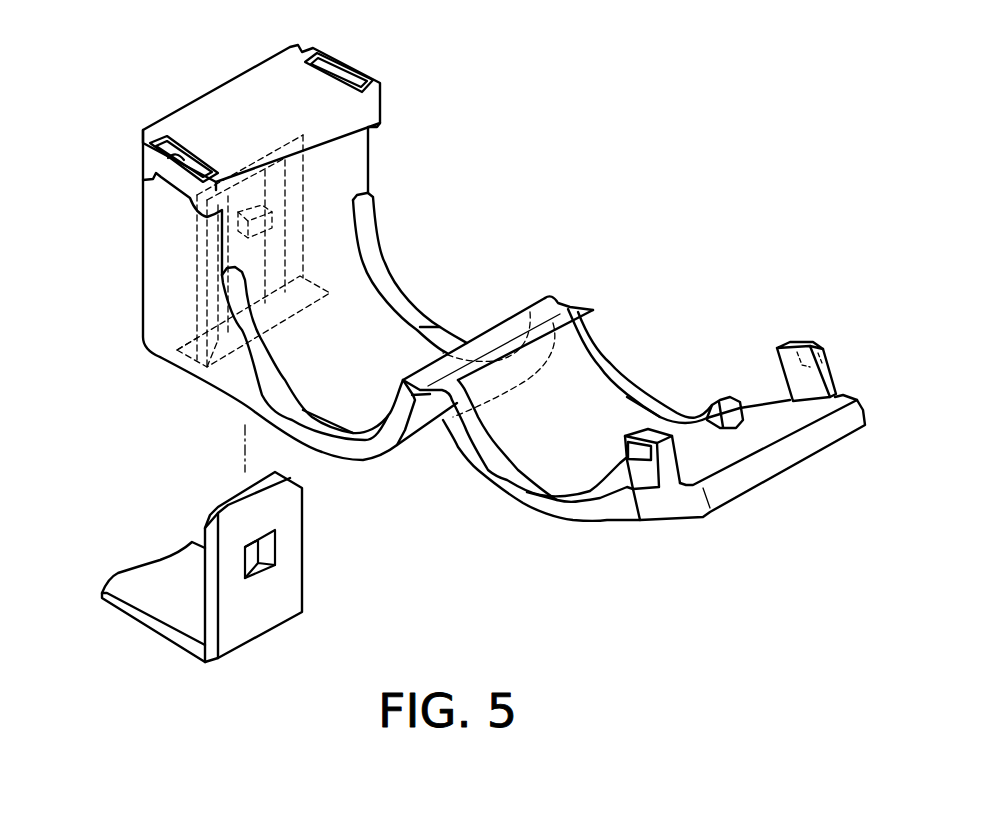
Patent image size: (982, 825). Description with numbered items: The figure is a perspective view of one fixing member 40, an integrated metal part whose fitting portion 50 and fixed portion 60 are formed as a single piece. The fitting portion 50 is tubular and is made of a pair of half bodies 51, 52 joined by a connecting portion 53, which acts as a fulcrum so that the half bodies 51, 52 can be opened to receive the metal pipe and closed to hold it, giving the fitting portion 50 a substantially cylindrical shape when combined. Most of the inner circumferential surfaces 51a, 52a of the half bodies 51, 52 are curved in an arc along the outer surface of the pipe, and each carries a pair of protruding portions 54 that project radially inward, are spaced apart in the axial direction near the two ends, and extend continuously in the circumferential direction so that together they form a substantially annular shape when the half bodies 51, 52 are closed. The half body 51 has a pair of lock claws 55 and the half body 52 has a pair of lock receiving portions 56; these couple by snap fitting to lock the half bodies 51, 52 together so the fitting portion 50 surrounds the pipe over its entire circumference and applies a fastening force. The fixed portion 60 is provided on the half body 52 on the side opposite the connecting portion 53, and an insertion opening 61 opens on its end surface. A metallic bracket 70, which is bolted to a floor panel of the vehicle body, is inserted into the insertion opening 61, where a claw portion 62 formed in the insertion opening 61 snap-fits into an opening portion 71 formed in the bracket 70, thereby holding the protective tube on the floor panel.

The fixing member 40 is at (553, 118).
The fitting portion 50 is at (348, 500).
The half body 51 is at (467, 452).
The inner circumferential surface 51a is at (605, 395).
The half body 52 is at (363, 452).
The inner circumferential surface 52a is at (410, 353).
The connecting portion 53 is at (418, 398).
The protruding portion 54 is at (306, 412).
The lock claw 55 is at (803, 334).
The lock receiving portion 56 is at (346, 78).
The fixed portion 60 is at (143, 287).
The insertion opening 61 is at (183, 362).
The claw portion 62 is at (212, 236).
The bracket 70 is at (137, 620).
The opening portion 71 is at (267, 548).